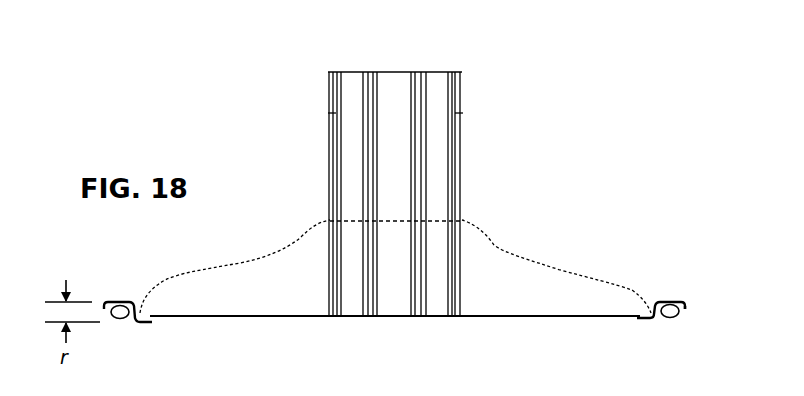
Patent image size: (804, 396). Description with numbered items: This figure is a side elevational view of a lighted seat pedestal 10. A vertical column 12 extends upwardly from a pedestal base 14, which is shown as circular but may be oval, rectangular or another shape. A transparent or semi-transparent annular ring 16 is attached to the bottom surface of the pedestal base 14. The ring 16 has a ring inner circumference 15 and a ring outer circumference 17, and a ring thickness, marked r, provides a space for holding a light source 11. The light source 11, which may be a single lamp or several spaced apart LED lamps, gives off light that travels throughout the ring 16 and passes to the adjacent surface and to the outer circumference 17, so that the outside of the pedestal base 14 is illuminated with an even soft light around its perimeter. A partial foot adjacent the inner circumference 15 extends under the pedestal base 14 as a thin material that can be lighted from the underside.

The seat pedestal 10 is at (578, 68).
The light source 11 is at (118, 319).
The vertical column 12 is at (440, 157).
The pedestal base 14 is at (546, 276).
The ring inner circumference 15 is at (640, 317).
The annular ring 16 is at (672, 300).
The ring outer circumference 17 is at (683, 305).